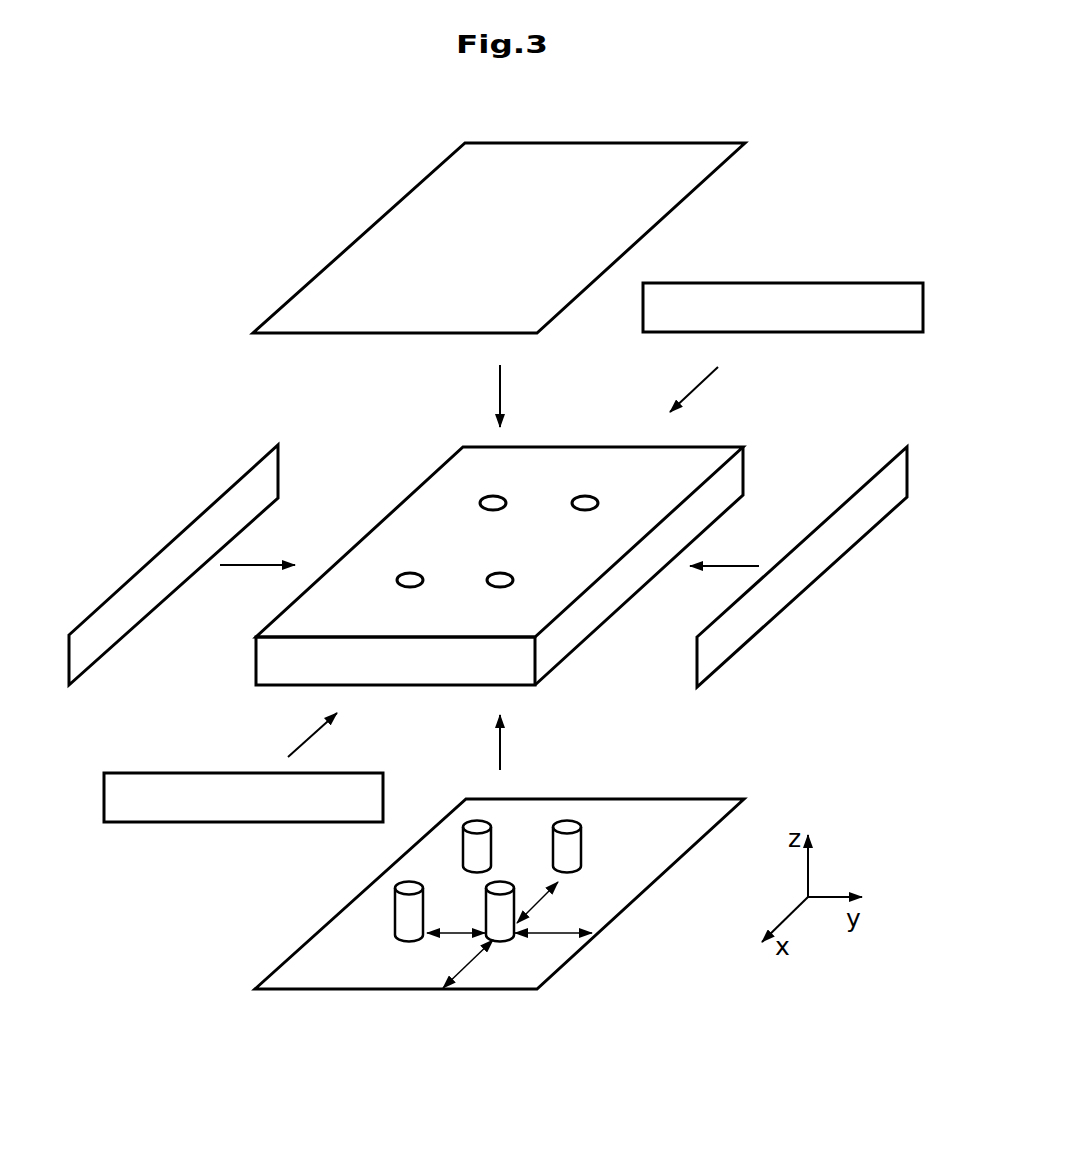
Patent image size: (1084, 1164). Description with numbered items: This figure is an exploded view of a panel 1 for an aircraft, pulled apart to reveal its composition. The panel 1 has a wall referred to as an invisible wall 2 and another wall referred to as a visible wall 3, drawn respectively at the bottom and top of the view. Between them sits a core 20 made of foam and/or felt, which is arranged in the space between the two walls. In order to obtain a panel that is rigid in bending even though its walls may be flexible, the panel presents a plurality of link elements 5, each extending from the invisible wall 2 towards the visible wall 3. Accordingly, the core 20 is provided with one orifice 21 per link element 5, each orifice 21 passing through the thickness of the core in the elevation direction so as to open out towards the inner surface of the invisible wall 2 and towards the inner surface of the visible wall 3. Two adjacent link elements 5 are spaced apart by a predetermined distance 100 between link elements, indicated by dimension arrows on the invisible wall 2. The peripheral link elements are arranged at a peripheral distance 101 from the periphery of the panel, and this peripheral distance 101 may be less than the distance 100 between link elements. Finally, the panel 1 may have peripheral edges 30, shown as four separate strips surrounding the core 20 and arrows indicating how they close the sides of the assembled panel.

The panel 1 is at (737, 1023).
The invisible wall 2 is at (560, 968).
The visible wall 3 is at (375, 222).
The link element 5 is at (460, 850).
The core 20 is at (747, 467).
The orifice 21 is at (507, 500).
The peripheral edge 30 is at (818, 282).
The distance between link elements 100 is at (672, 905).
The peripheral distance 101 is at (617, 955).